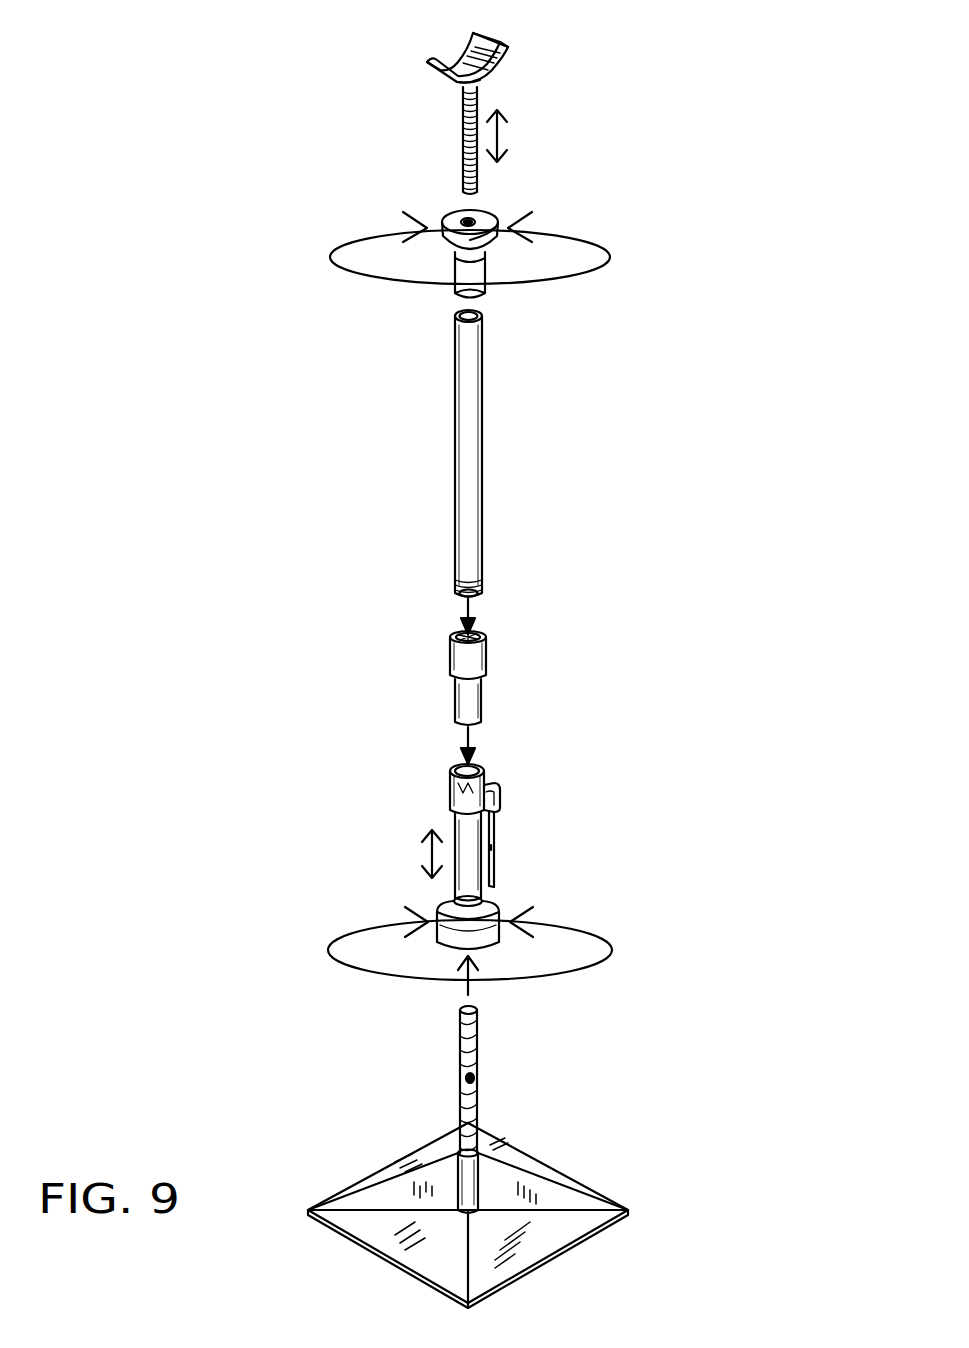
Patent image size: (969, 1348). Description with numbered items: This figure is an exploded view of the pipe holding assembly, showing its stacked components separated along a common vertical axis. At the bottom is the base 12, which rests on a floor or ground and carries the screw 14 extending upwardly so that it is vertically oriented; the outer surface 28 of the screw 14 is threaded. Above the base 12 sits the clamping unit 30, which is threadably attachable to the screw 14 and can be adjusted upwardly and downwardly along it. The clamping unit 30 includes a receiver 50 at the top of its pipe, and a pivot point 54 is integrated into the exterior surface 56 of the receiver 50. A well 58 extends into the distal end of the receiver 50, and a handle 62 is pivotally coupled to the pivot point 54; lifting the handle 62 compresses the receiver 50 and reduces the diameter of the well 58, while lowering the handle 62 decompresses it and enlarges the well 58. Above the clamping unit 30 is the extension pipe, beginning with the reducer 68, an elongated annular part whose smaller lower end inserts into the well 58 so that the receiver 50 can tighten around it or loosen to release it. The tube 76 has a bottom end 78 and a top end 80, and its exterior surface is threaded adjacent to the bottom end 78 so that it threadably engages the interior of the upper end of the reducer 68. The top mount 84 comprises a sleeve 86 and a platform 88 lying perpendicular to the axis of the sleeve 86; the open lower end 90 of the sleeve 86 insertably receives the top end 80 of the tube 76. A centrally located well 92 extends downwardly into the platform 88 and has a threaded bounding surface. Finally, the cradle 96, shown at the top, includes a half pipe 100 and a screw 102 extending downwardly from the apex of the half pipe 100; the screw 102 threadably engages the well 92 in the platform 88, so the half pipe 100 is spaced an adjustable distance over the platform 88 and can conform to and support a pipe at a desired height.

The base 12 is at (572, 1182).
The screw 14 is at (460, 1055).
The outer surface 28 is at (472, 1075).
The clamping unit 30 is at (512, 826).
The receiver 50 is at (448, 782).
The pivot point 54 is at (483, 790).
The exterior surface 56 is at (470, 790).
The well 58 is at (492, 752).
The handle 62 is at (493, 853).
The reducer 68 is at (485, 658).
The tube 76 is at (483, 427).
The bottom end 78 is at (462, 593).
The top end 80 is at (457, 317).
The top mount 84 is at (490, 235).
The sleeve 86 is at (487, 268).
The platform 88 is at (445, 215).
The lower end 90 is at (460, 292).
The well 92 is at (480, 220).
The cradle 96 is at (412, 56).
The half pipe 100 is at (506, 46).
The screw 102 is at (463, 127).